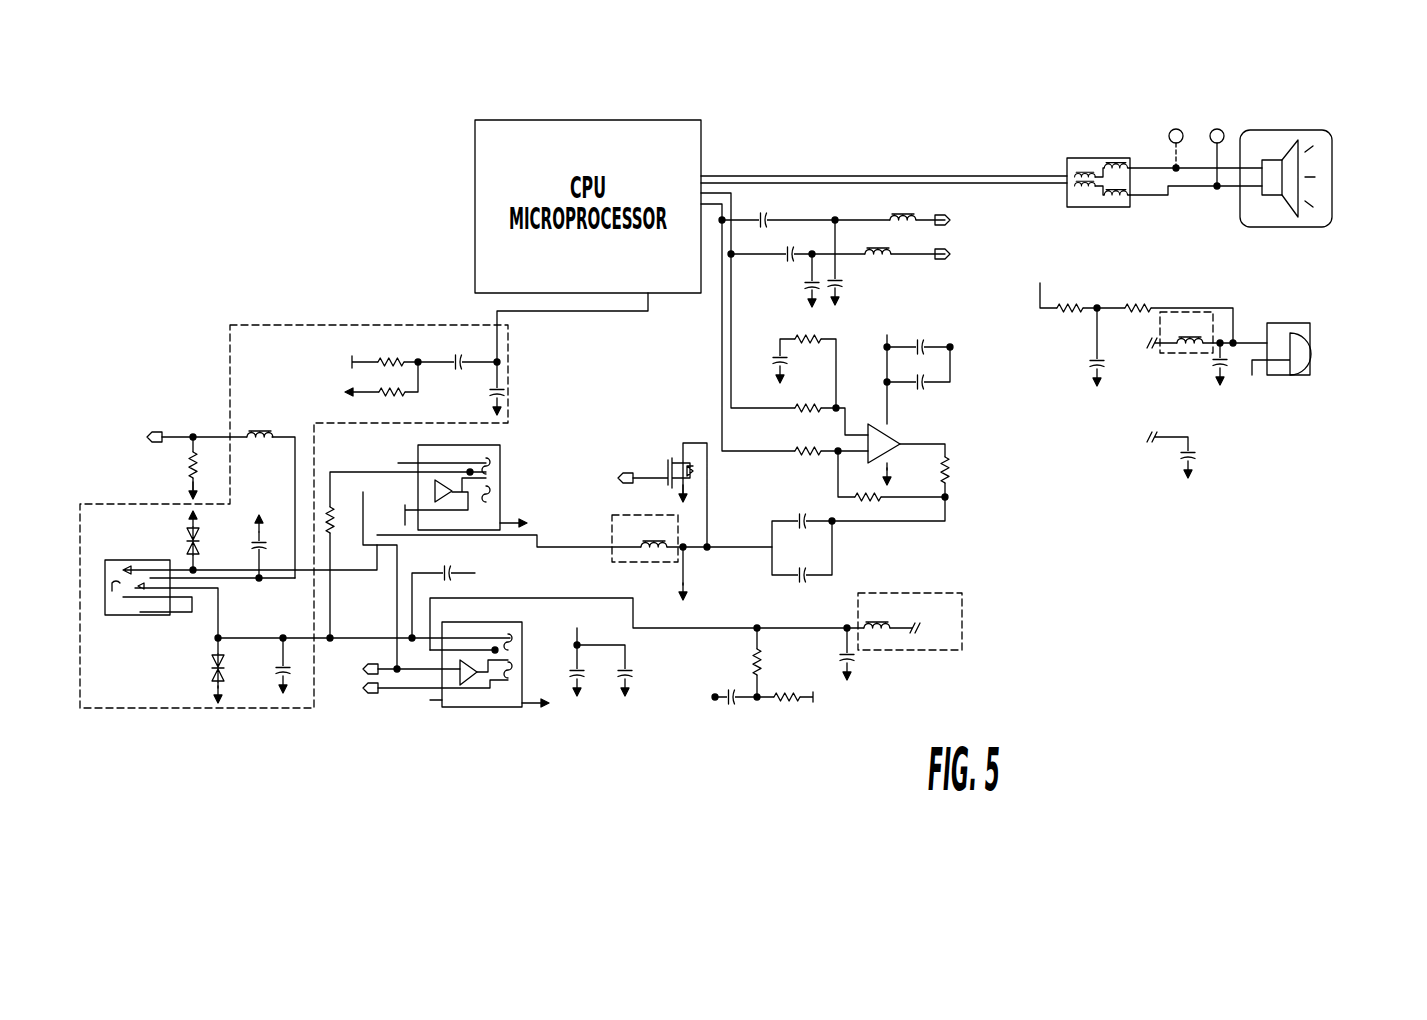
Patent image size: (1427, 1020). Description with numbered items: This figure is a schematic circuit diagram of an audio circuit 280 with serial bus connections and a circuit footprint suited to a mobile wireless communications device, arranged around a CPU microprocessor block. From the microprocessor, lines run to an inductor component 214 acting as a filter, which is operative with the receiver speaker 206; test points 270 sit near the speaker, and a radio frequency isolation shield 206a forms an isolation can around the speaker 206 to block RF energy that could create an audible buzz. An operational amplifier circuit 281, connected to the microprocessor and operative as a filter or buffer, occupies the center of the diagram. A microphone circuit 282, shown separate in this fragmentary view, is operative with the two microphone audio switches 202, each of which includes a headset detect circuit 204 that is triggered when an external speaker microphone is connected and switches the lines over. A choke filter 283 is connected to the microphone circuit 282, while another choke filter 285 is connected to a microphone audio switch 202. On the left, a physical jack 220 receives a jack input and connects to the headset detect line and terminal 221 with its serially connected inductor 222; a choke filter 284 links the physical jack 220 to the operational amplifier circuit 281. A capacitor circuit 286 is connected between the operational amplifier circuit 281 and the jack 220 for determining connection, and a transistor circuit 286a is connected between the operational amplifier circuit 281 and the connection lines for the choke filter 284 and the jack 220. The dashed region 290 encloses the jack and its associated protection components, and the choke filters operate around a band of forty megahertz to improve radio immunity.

The audio circuit 280 is at (799, 144).
The inductor component 214 is at (1110, 160).
The test points 270 is at (1218, 128).
The receiver speaker 206 is at (1290, 150).
The radio frequency isolation shield 206a is at (1332, 185).
The choke filter 283 is at (1167, 312).
The microphone circuit 282 is at (1321, 304).
The operational amplifier circuit 281 is at (978, 444).
The choke filter 284 is at (683, 533).
The transistor circuit 286a is at (665, 468).
The capacitor circuit 286 is at (818, 550).
The choke filter 285 is at (912, 593).
The headset detect line and terminal 221 is at (167, 437).
The inductor 222 is at (258, 430).
The physical jack 220 is at (123, 560).
The protection circuit 290 is at (130, 708).
The microphone audio switches 202 is at (500, 480).
The headset detect circuit 204 is at (445, 490).